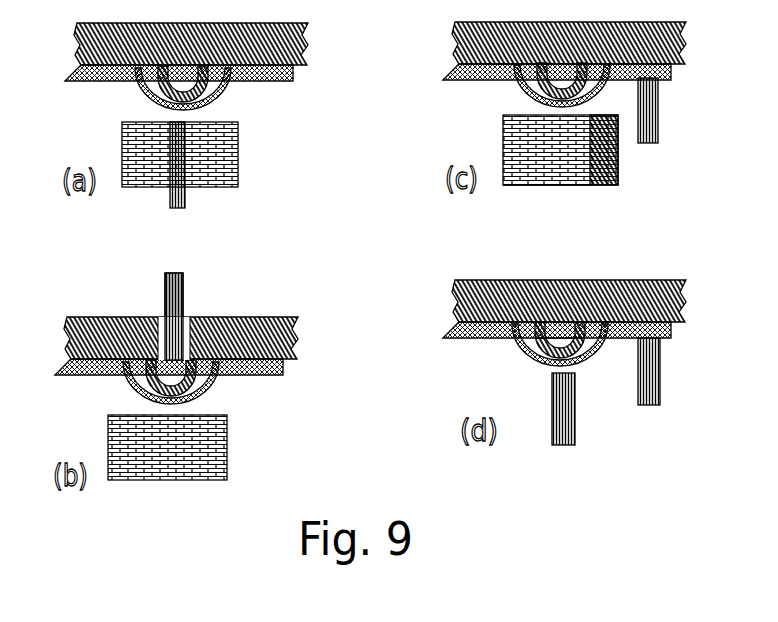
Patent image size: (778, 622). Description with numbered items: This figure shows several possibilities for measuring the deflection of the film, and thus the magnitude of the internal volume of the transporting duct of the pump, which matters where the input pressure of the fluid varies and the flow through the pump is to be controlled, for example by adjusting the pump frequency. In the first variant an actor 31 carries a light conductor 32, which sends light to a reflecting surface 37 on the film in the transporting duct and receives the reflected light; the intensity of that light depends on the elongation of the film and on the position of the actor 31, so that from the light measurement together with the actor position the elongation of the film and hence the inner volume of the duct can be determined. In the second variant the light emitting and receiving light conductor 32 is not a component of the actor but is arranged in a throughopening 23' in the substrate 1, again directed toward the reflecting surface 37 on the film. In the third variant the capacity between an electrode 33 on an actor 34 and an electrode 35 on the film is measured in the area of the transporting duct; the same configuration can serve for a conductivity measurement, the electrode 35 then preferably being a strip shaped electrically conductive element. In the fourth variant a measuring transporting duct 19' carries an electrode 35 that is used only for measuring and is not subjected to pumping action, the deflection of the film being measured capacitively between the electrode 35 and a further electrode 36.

The substrate 1 is at (290, 342).
The measuring transporting duct 19' is at (516, 360).
The throughopening 23' is at (141, 311).
The actor 31 is at (240, 136).
The light conductor 32 is at (187, 202).
The electrode 33 is at (515, 109).
The actor 34 is at (535, 186).
The electrode 35 is at (527, 97).
The further electrode 36 is at (553, 374).
The reflecting surface 37 is at (140, 105).